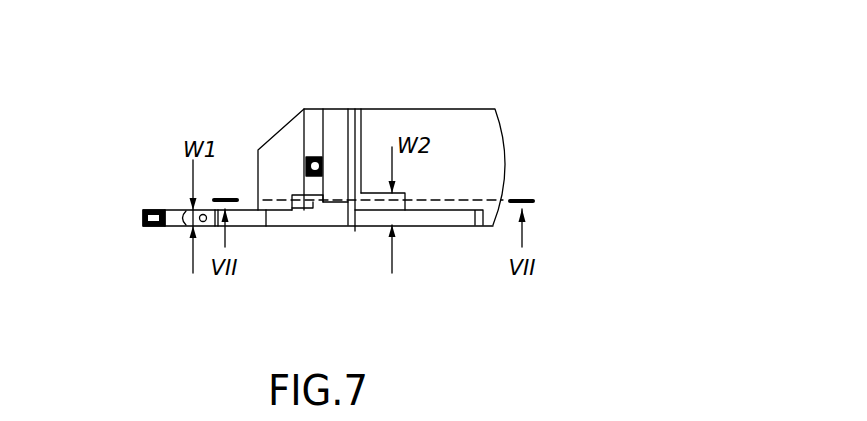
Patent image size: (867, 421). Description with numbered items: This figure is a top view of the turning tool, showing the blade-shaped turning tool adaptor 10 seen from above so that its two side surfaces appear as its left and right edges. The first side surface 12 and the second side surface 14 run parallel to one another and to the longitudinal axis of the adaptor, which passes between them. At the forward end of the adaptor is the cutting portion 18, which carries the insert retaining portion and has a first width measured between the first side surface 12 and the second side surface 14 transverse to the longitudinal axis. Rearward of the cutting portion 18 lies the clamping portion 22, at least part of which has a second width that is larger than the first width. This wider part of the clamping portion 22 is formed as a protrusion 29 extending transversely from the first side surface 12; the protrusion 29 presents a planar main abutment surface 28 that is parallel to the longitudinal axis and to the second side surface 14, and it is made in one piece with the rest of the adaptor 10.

The turning tool adaptor 10 is at (313, 187).
The first side surface 12 is at (457, 207).
The second side surface 14 is at (440, 230).
The cutting portion 18 is at (150, 182).
The clamping portion 22 is at (353, 232).
The main abutment surface 28 is at (383, 192).
The protrusion 29 is at (373, 190).